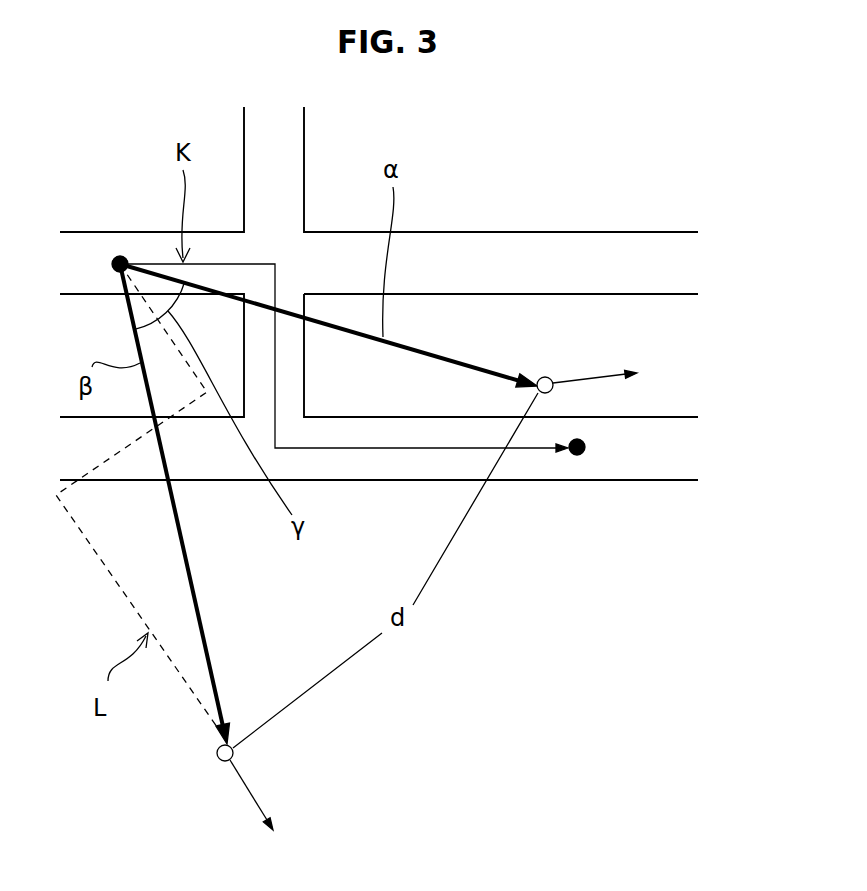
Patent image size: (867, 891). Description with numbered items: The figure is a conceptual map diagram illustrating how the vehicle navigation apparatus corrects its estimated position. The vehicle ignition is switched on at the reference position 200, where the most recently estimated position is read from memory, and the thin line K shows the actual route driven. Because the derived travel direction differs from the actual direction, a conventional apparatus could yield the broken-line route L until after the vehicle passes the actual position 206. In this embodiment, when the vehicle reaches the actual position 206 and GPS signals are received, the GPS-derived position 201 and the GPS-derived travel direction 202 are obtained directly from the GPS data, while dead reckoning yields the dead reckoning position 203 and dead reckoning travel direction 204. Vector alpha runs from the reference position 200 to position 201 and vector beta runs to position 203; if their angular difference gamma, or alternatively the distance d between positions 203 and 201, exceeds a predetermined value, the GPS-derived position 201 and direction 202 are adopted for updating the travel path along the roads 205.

The reference position 200 is at (120, 254).
The GPS-derived position 201 is at (547, 377).
The GPS-derived travel direction 202 is at (603, 371).
The dead reckoning position 203 is at (234, 756).
The dead reckoning travel direction 204 is at (268, 806).
The road 205 is at (577, 233).
The actual position 206 is at (577, 462).